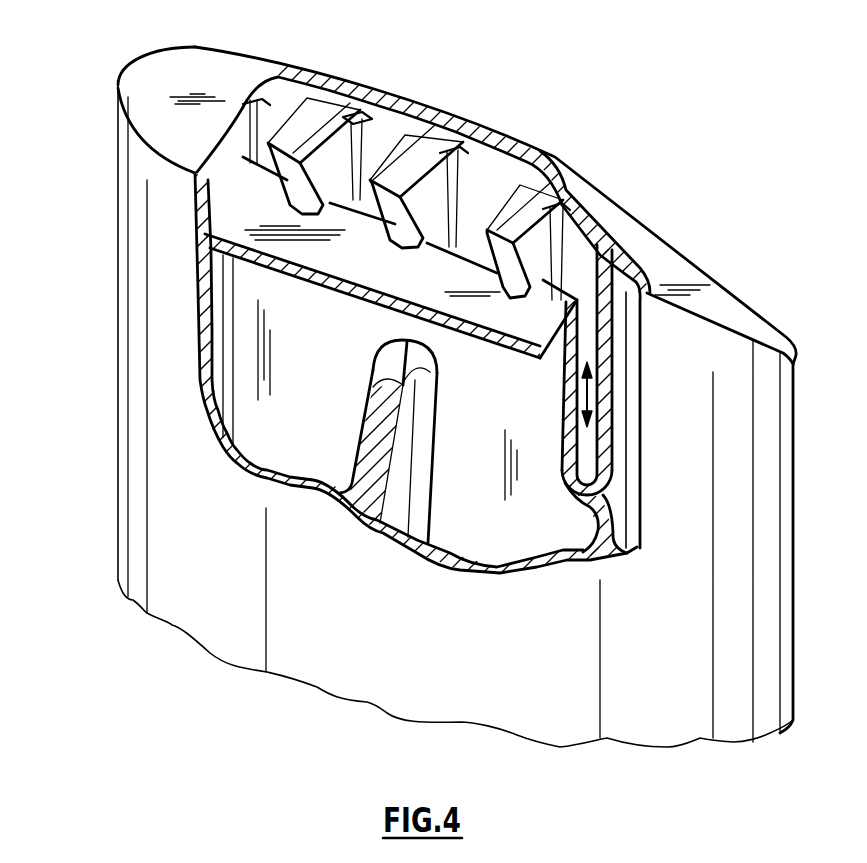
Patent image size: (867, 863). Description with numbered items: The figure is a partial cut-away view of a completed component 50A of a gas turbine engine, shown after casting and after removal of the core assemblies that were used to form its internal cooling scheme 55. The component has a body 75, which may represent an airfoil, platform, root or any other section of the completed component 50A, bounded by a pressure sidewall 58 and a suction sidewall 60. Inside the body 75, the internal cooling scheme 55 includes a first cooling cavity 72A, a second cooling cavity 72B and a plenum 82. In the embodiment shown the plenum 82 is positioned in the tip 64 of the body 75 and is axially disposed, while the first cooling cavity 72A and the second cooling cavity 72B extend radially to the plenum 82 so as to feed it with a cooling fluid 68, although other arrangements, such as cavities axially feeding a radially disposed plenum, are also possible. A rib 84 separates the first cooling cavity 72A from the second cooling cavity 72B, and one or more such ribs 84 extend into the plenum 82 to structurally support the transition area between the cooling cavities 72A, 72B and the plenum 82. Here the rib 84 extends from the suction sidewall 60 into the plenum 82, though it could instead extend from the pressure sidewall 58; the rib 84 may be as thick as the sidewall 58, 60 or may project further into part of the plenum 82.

The completed component 50A is at (556, 92).
The tip 64 is at (108, 74).
The pressure sidewall 58 is at (197, 384).
The body 75 is at (697, 350).
The suction sidewall 60 is at (487, 178).
The rib 84 is at (290, 153).
The plenum 82 is at (360, 210).
The first cooling cavity 72A is at (476, 228).
The second cooling cavity 72B is at (583, 440).
The cooling fluid 68 is at (577, 387).
The internal cooling scheme 55 is at (565, 458).